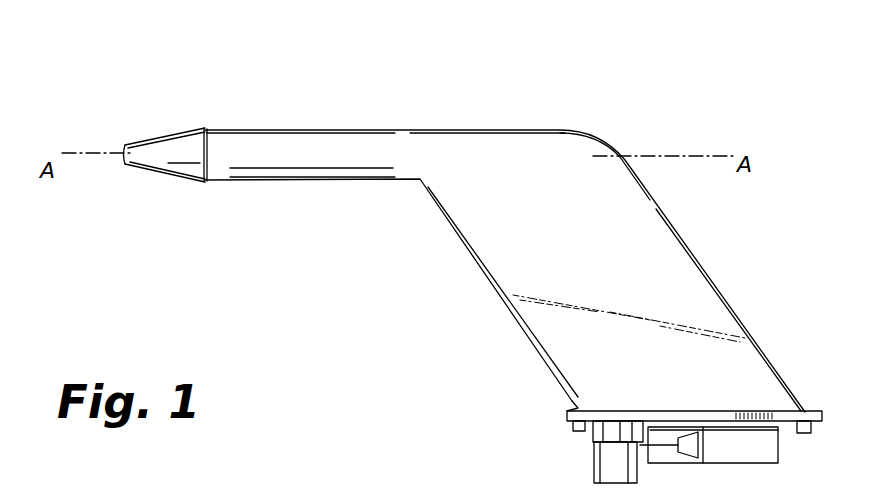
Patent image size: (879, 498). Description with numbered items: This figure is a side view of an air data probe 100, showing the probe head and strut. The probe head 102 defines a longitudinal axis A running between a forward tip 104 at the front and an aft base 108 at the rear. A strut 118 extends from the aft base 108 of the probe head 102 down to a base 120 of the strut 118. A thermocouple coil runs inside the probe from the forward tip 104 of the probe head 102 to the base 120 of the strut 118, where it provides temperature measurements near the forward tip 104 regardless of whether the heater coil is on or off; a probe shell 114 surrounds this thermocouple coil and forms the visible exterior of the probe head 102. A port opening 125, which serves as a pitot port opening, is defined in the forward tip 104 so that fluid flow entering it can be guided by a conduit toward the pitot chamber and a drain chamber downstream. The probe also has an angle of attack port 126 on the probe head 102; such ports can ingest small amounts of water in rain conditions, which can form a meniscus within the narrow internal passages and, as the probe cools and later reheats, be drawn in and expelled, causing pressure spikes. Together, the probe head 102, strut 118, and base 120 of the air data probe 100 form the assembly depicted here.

The air data probe 100 is at (175, 80).
The probe head 102 is at (385, 128).
The forward tip 104 is at (156, 167).
The aft base 108 is at (427, 160).
The probe shell 114 is at (522, 130).
The strut 118 is at (675, 262).
The base of strut 120 is at (567, 413).
The port opening 125 is at (123, 152).
The angle of attack port 126 is at (262, 153).